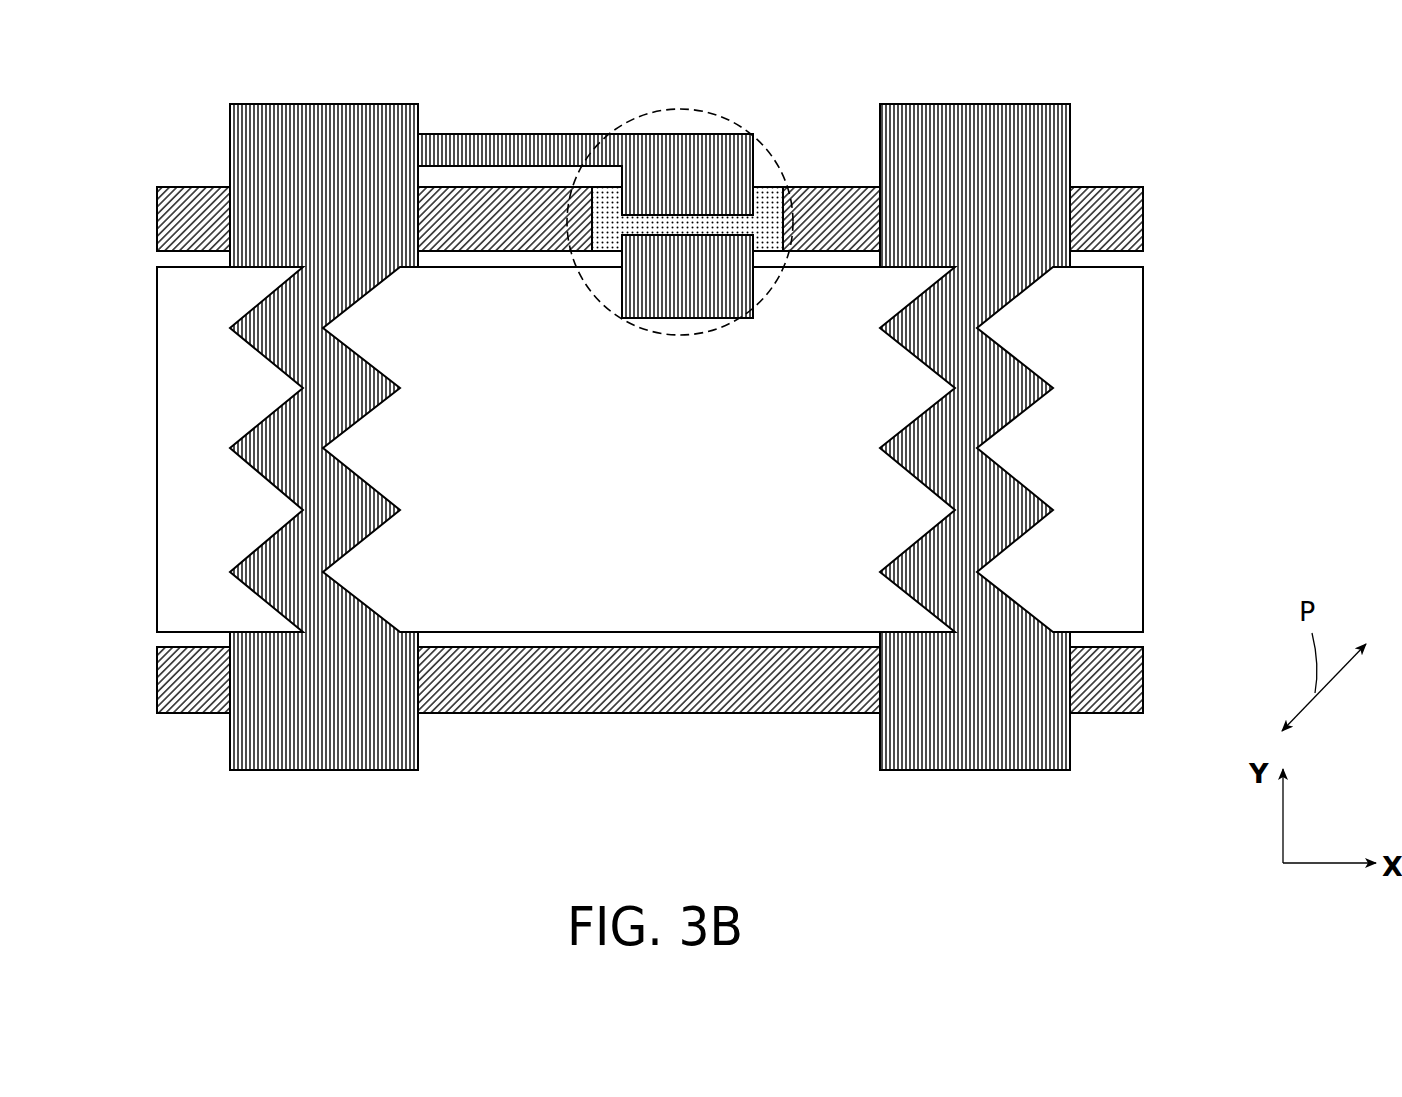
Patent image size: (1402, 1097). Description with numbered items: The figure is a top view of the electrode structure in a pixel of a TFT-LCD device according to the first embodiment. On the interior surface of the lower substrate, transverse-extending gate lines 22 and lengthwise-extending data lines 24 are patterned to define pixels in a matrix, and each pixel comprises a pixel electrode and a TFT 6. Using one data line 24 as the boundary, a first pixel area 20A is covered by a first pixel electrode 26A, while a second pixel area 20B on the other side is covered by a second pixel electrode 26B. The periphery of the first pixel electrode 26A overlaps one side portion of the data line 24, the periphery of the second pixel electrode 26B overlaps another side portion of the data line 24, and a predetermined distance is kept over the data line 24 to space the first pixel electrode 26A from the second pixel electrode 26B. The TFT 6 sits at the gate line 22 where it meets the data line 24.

The TFT 6 is at (749, 106).
The first pixel area 20A is at (513, 552).
The second pixel area 20B is at (191, 597).
The gate line 22 is at (1143, 212).
The data line 24 is at (248, 137).
The first pixel electrode 26A is at (726, 490).
The second pixel electrode 26B is at (223, 490).